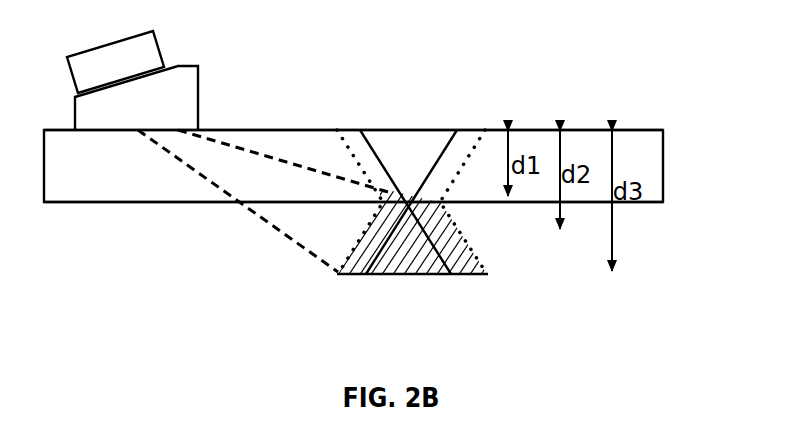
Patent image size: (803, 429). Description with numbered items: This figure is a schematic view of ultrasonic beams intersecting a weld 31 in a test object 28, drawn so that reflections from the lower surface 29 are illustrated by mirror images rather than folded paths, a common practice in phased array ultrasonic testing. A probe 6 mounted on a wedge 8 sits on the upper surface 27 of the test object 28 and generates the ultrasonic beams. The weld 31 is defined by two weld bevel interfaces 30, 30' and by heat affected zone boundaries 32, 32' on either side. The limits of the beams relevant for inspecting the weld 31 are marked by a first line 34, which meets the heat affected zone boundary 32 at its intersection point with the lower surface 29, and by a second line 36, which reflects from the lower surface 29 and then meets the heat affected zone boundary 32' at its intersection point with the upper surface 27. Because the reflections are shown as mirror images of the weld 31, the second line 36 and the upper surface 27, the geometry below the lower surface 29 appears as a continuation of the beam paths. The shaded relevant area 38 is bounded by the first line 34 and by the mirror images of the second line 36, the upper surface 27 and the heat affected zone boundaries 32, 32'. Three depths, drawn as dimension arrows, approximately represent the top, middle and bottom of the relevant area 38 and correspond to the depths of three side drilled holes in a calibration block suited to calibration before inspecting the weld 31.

The probe 6 is at (117, 52).
The wedge 8 is at (93, 113).
The upper surface 27 is at (580, 130).
The test object 28 is at (650, 164).
The lower surface 29 is at (75, 205).
The weld bevel interface 30 is at (411, 179).
The weld bevel interface 30' is at (395, 177).
The weld 31 is at (408, 153).
The heat affected zone boundary 32 is at (466, 171).
The heat affected zone boundary 32' is at (342, 169).
The first line 34 is at (250, 148).
The second line 36 is at (200, 173).
The relevant area 38 is at (408, 250).